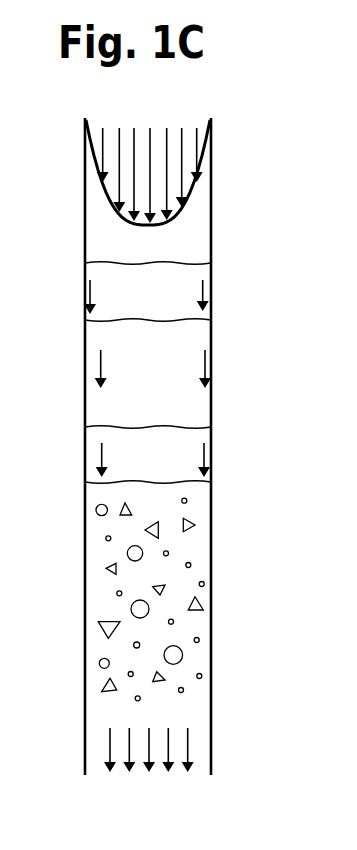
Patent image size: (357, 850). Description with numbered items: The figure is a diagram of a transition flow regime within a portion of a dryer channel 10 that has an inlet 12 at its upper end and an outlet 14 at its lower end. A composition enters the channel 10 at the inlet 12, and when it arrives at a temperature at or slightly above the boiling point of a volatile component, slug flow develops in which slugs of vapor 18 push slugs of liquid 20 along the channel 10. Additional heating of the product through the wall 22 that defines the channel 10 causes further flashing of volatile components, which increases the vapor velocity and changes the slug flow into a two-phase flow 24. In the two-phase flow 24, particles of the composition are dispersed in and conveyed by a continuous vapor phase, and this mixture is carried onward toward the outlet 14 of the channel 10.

The dryer channel 10 is at (210, 302).
The inlet 12 is at (170, 125).
The outlet 14 is at (157, 773).
The slugs of vapor 18 is at (200, 398).
The slugs of liquid 20 is at (202, 273).
The wall 22 is at (210, 562).
The two-phase flow 24 is at (192, 662).